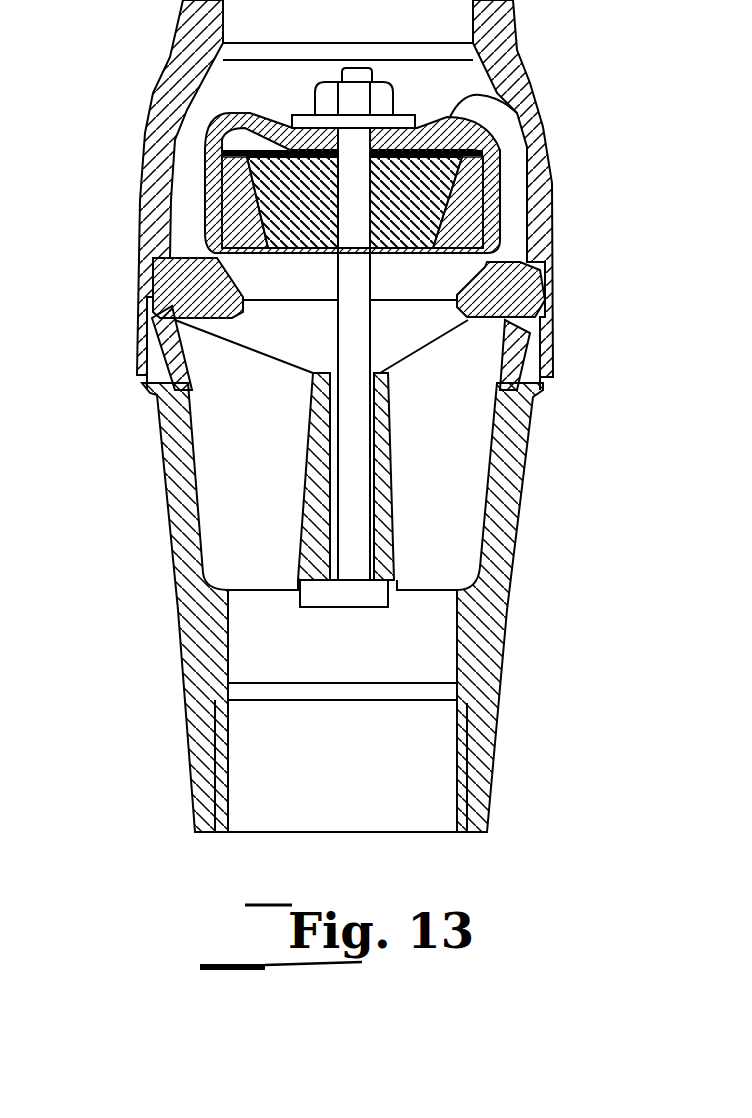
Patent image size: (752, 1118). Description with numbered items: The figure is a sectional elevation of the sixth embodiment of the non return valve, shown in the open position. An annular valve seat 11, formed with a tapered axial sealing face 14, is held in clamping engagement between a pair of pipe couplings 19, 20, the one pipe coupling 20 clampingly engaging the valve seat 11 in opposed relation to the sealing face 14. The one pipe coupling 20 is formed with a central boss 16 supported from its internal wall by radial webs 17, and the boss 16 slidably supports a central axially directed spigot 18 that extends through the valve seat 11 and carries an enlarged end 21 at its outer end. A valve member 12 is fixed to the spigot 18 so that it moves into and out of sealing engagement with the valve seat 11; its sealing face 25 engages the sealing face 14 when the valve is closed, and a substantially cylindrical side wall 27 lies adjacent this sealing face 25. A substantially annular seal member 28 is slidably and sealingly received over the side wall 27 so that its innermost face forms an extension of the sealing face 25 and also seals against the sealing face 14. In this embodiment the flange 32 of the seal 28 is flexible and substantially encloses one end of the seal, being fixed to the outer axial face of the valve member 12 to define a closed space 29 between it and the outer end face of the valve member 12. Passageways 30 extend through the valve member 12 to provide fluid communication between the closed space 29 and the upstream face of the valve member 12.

The valve seat 11 is at (548, 312).
The valve member 12 is at (510, 207).
The sealing face 14 is at (537, 288).
The central boss 16 is at (390, 530).
The radial webs 17 is at (475, 465).
The spigot 18 is at (350, 440).
The pipe coupling 19 is at (530, 62).
The pipe coupling 20 is at (492, 622).
The enlarged end 21 is at (365, 607).
The sealing face 25 is at (213, 256).
The side wall 27 is at (207, 208).
The seal member 28 is at (483, 150).
The closed space 29 is at (505, 180).
The passageways 30 is at (450, 238).
The flange 32 is at (452, 112).